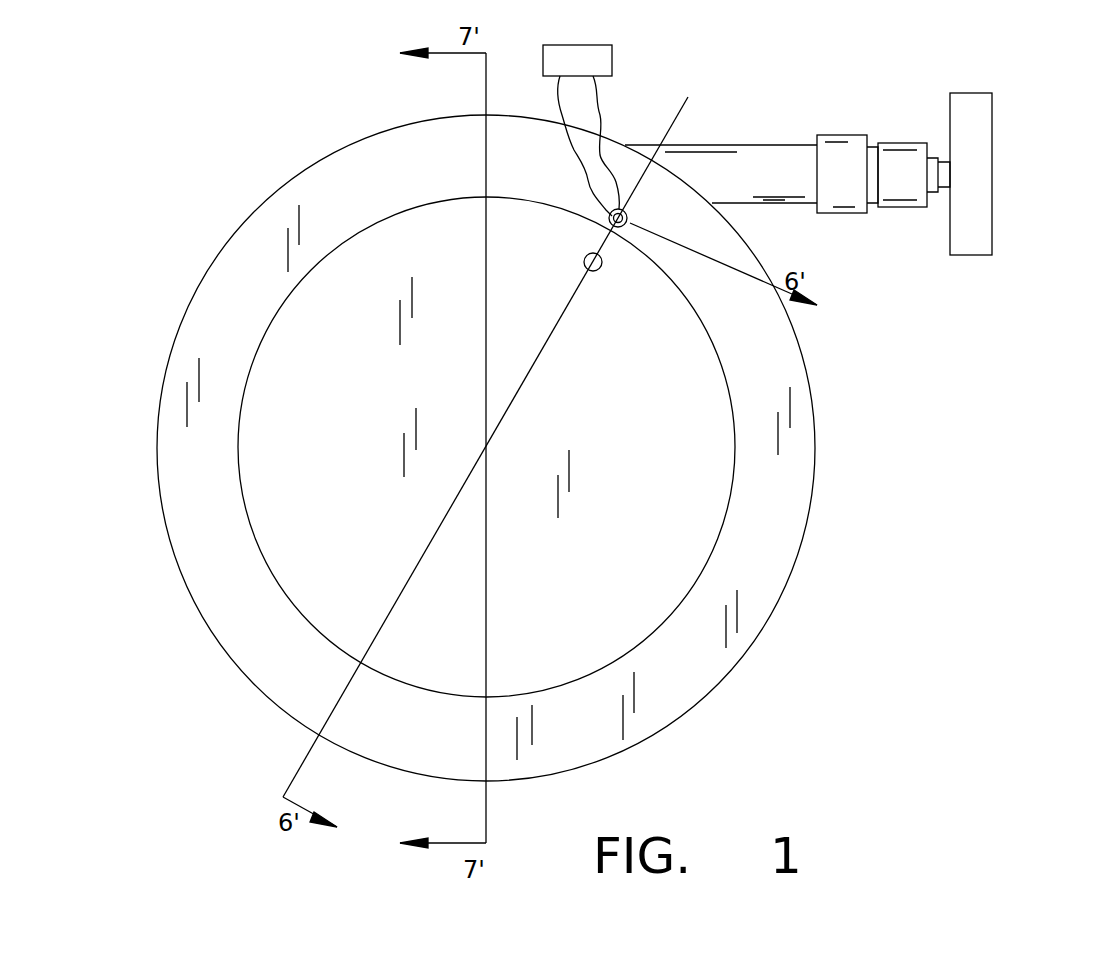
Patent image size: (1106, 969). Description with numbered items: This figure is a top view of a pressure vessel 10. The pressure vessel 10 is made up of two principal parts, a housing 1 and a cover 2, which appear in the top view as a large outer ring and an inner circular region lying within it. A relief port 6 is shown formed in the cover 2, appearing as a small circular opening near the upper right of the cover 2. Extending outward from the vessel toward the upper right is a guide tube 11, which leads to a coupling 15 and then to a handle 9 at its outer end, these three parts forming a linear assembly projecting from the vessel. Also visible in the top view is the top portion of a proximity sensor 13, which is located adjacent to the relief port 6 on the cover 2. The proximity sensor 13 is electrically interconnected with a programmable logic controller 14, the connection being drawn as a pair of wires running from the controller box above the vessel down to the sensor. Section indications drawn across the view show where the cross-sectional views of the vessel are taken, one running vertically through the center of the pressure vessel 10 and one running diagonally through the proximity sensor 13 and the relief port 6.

The housing 1 is at (737, 582).
The cover 2 is at (685, 478).
The relief port 6 is at (601, 266).
The handle 9 is at (973, 123).
The pressure vessel 10 is at (255, 167).
The guide tube 11 is at (762, 168).
The proximity sensor 13 is at (623, 210).
The programmable logic controller 14 is at (607, 50).
The coupling 15 is at (845, 158).